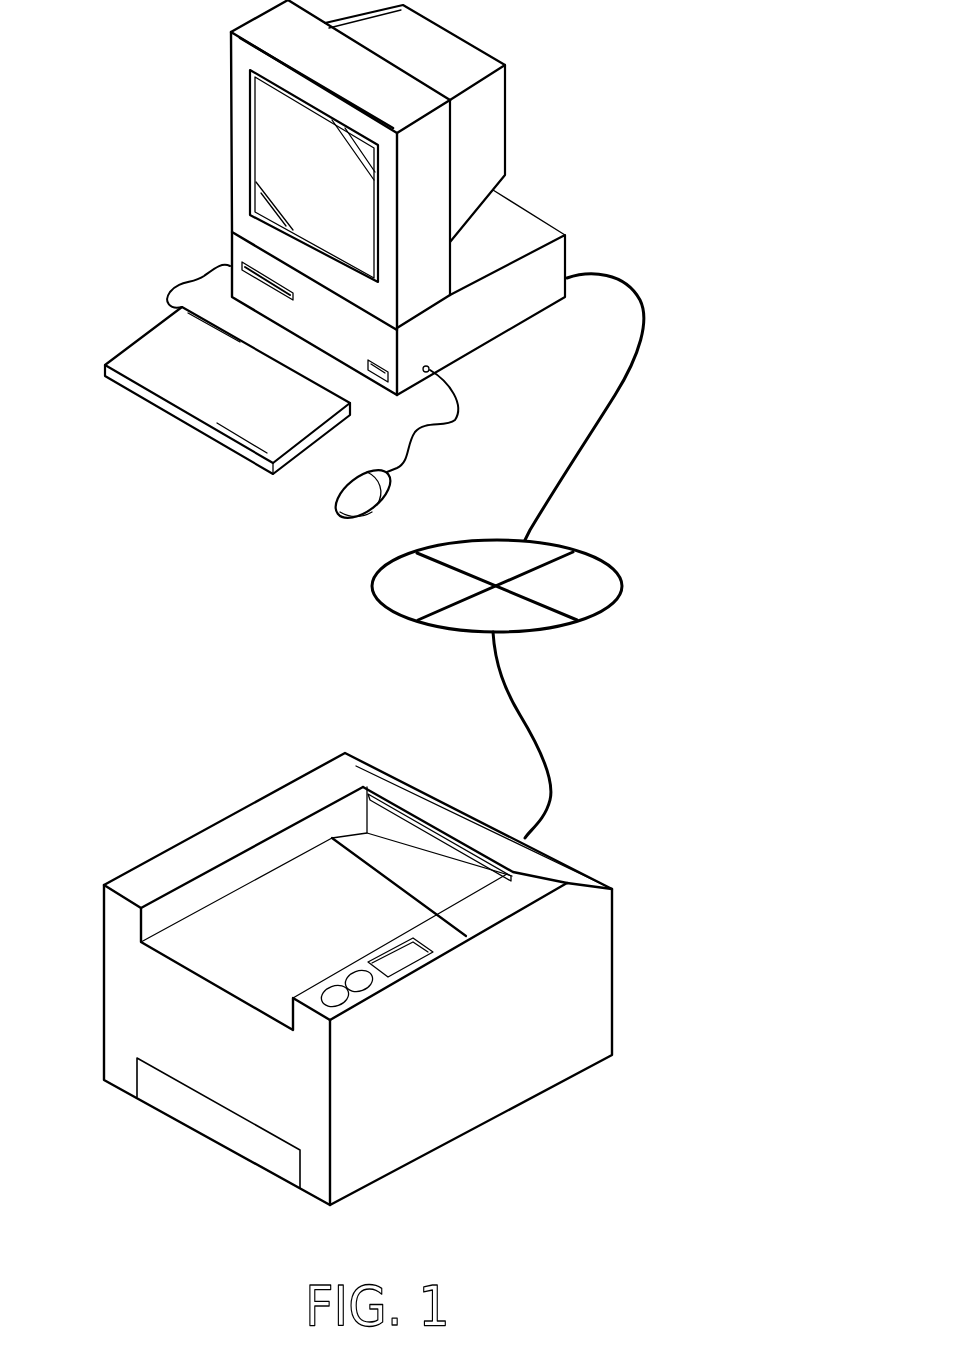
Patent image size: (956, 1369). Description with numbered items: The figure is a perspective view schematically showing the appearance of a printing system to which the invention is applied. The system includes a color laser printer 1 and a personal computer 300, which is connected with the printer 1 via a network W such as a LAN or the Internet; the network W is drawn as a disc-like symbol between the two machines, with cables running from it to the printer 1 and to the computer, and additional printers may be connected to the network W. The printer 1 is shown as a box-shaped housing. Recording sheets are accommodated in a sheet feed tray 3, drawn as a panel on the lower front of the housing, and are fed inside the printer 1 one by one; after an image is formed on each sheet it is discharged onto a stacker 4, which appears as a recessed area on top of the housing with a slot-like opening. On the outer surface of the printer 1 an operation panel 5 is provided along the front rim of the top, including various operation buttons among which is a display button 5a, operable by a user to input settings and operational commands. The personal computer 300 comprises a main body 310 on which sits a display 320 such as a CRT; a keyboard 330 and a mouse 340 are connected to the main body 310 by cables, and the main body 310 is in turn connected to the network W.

The color laser printer 1 is at (399, 976).
The sheet feed tray 3 is at (180, 1112).
The stacker 4 is at (395, 863).
The operation panel 5 is at (404, 948).
The display button 5a is at (404, 961).
The personal computer 300 is at (536, 160).
The main body 310 is at (492, 320).
The display 320 is at (242, 103).
The keyboard 330 is at (160, 378).
The mouse 340 is at (340, 508).
The network W is at (607, 562).